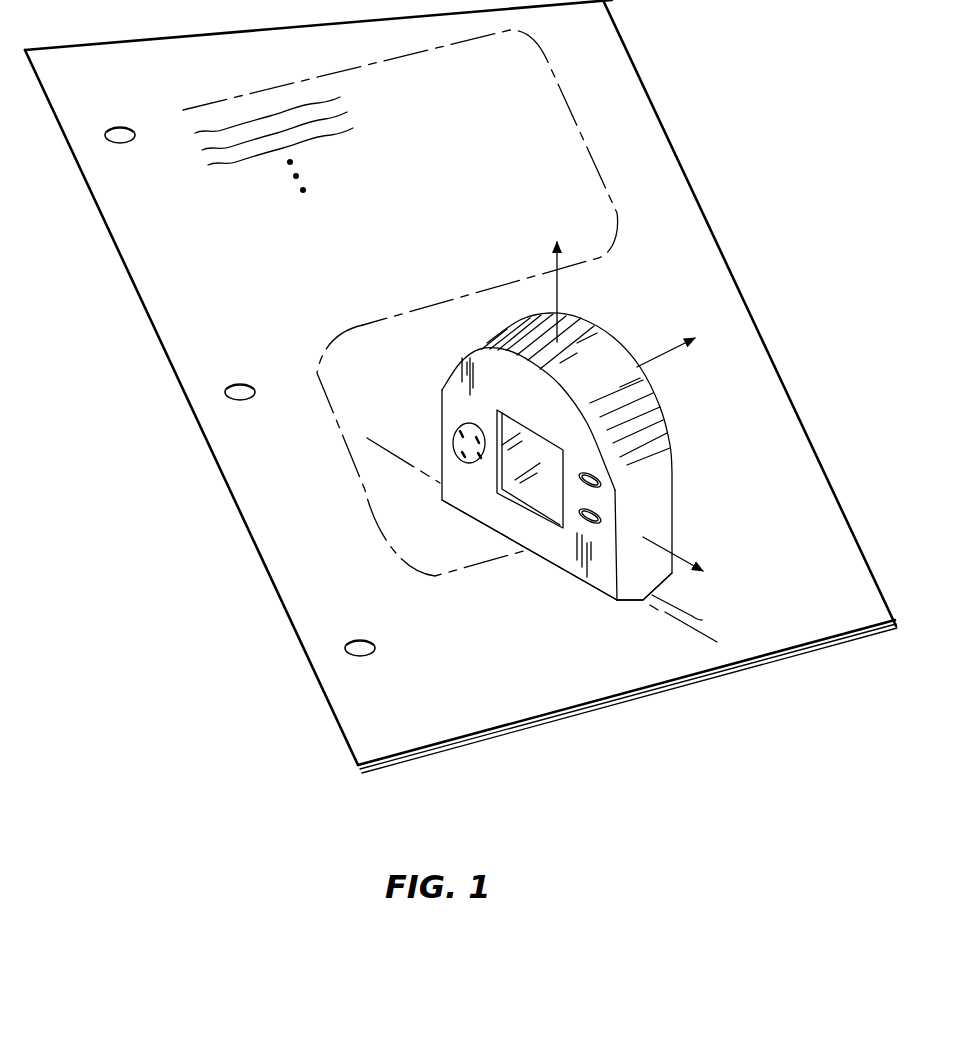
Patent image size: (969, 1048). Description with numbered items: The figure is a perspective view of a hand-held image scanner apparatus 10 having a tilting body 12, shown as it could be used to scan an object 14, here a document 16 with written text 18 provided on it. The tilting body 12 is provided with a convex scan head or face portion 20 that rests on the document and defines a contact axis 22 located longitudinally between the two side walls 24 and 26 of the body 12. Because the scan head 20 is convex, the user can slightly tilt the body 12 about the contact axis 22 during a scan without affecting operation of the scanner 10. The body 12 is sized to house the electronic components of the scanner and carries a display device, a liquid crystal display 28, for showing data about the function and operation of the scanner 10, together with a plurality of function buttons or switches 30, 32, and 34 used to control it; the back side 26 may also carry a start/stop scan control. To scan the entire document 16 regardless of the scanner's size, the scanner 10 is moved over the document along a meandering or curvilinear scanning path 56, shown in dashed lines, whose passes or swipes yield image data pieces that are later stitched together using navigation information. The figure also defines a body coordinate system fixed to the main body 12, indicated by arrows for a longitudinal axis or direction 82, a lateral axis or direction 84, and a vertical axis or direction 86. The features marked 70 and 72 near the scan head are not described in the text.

The hand-held image scanner apparatus 10 is at (571, 440).
The tilting body 12 is at (571, 468).
The object 14 is at (704, 197).
The document 16 is at (766, 336).
The written text 18 is at (353, 128).
The convex scan head or face portion 20 is at (680, 585).
The contact axis 22 is at (712, 642).
The side wall 24 is at (457, 392).
The side wall (back side) 26 is at (672, 441).
The liquid crystal display 28 is at (482, 493).
The function button or switch 30 is at (454, 434).
The function button or switch 32 is at (605, 481).
The function button or switch 34 is at (605, 518).
The meandering or curvilinear scanning path 56 is at (362, 488).
The bottom edge 70 is at (629, 602).
The connector lead 72 is at (703, 620).
The longitudinal axis or direction 82 is at (668, 352).
The lateral axis or direction 84 is at (694, 566).
The vertical axis or direction 86 is at (555, 262).